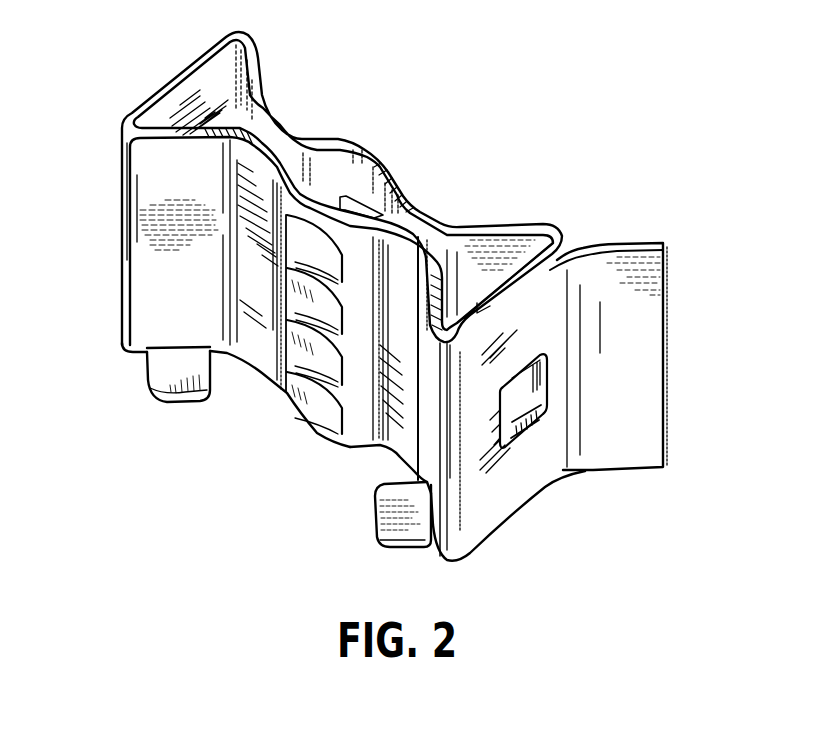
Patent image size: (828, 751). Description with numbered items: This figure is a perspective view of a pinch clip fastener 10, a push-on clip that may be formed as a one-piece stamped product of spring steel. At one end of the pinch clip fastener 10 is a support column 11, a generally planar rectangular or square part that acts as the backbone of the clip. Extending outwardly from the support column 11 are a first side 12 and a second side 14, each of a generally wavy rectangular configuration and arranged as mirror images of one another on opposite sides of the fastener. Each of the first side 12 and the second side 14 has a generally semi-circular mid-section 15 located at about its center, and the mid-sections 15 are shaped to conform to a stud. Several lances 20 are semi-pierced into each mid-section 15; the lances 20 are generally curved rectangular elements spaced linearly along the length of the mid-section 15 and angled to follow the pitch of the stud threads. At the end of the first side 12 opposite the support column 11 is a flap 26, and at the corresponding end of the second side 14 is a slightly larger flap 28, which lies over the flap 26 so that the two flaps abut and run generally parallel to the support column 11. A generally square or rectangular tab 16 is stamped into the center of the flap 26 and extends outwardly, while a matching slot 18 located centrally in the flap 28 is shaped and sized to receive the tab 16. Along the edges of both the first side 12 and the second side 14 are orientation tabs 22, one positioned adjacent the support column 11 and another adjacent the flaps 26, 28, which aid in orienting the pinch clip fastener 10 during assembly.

The pinch clip fastener 10 is at (538, 62).
The support column 11 is at (190, 110).
The first side 12 is at (245, 88).
The second side 14 is at (250, 337).
The mid-section 15 is at (361, 162).
The tab 16 is at (528, 386).
The slot 18 is at (517, 430).
The lance 20 is at (322, 360).
The orientation tab 22 is at (167, 372).
The flap 26 is at (503, 287).
The flap 28 is at (608, 450).